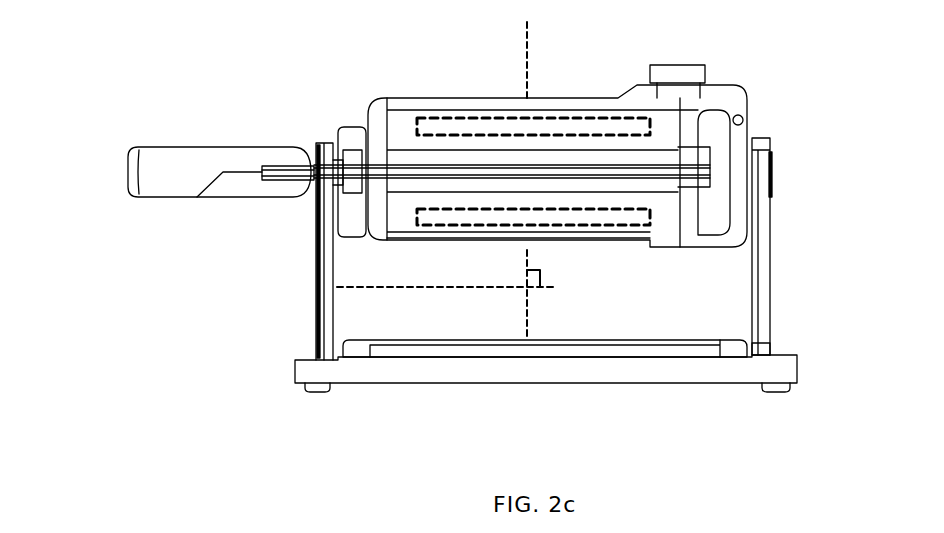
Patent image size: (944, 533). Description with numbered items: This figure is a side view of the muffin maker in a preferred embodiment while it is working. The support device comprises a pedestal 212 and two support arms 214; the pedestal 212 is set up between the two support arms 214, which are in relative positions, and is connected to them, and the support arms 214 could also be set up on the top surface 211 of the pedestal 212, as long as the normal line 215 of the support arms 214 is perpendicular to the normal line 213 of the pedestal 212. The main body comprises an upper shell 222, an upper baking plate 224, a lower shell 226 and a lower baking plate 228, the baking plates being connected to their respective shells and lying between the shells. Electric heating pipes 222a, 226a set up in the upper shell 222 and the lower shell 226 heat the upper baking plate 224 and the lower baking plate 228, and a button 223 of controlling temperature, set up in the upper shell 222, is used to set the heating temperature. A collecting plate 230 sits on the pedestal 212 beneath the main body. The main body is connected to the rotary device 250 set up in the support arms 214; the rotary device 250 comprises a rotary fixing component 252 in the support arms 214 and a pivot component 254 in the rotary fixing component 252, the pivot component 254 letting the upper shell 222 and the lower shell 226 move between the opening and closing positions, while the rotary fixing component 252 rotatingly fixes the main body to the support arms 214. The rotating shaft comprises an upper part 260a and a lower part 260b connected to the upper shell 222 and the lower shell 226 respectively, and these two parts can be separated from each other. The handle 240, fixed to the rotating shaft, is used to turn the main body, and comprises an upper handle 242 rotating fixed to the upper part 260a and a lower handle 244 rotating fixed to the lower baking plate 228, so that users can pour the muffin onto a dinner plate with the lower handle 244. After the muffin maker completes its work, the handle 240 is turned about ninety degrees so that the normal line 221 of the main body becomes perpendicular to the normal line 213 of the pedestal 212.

The top surface 211 is at (752, 353).
The pedestal 212 is at (403, 375).
The normal line of the pedestal 213 is at (524, 315).
The support arms 214 is at (327, 347).
The normal line of the support arms 215 is at (448, 287).
The normal line of the main body 221 is at (560, 37).
The upper shell 222 is at (463, 103).
The electric heating pipe 222a is at (543, 117).
The button of controlling temperature 223 is at (680, 72).
The upper baking plate 224 is at (372, 165).
The lower shell 226 is at (448, 240).
The electric heating pipe 226a is at (543, 225).
The lower baking plate 228 is at (365, 183).
The collecting plate 230 is at (635, 343).
The handle 240 is at (121, 33).
The upper handle 242 is at (200, 168).
The lower handle 244 is at (263, 183).
The rotary device 250 is at (803, 118).
The rotary fixing component 252 is at (770, 177).
The pivot component 254 is at (746, 118).
The upper part 260a is at (315, 143).
The lower part 260b is at (333, 187).